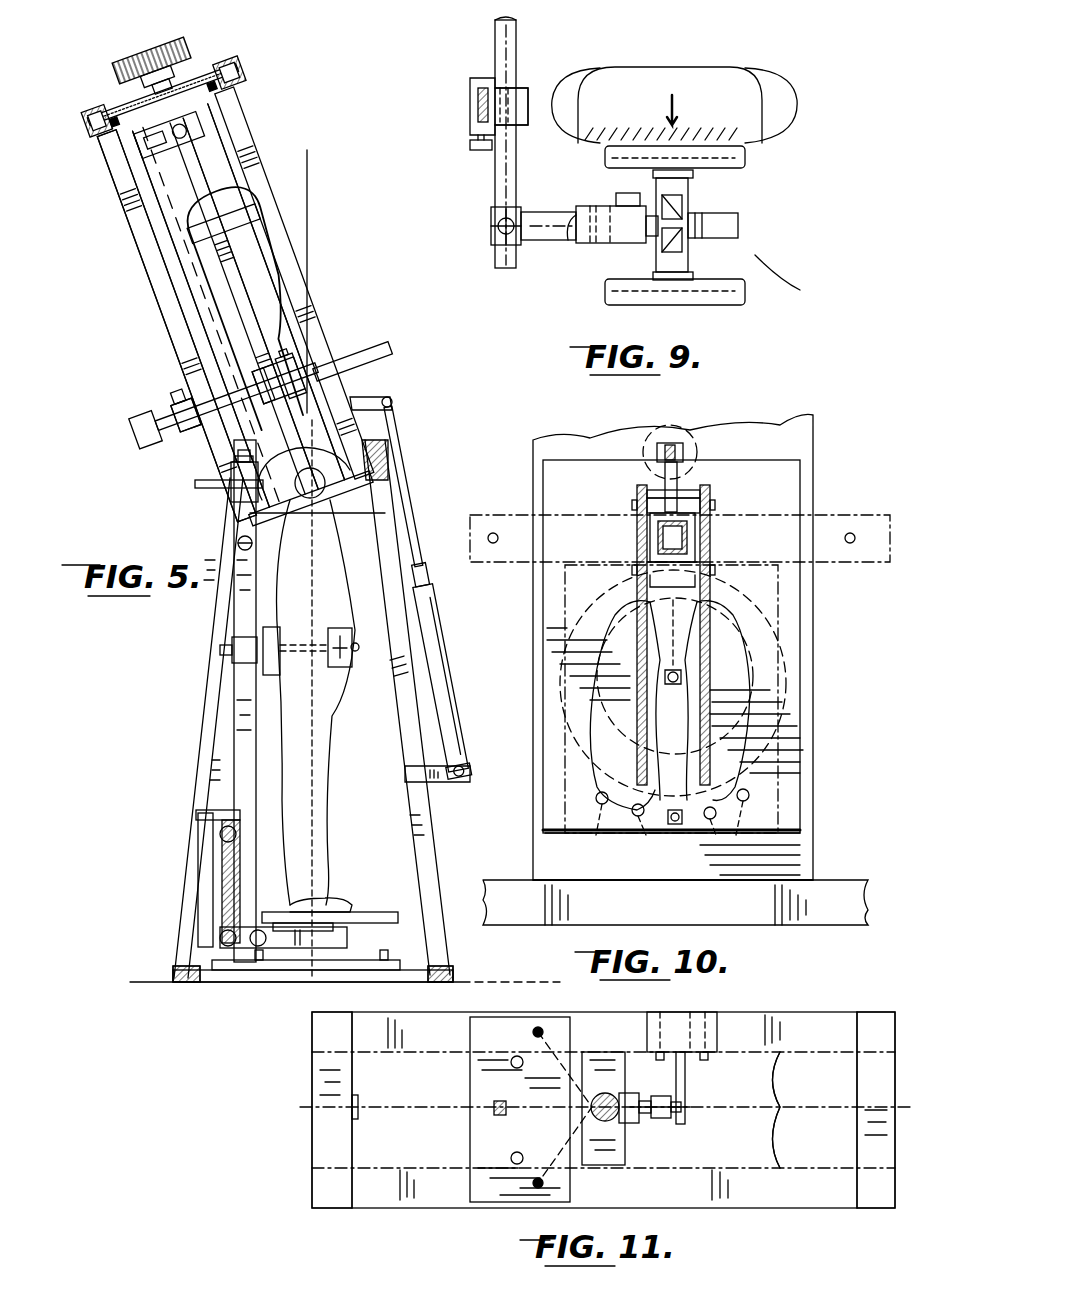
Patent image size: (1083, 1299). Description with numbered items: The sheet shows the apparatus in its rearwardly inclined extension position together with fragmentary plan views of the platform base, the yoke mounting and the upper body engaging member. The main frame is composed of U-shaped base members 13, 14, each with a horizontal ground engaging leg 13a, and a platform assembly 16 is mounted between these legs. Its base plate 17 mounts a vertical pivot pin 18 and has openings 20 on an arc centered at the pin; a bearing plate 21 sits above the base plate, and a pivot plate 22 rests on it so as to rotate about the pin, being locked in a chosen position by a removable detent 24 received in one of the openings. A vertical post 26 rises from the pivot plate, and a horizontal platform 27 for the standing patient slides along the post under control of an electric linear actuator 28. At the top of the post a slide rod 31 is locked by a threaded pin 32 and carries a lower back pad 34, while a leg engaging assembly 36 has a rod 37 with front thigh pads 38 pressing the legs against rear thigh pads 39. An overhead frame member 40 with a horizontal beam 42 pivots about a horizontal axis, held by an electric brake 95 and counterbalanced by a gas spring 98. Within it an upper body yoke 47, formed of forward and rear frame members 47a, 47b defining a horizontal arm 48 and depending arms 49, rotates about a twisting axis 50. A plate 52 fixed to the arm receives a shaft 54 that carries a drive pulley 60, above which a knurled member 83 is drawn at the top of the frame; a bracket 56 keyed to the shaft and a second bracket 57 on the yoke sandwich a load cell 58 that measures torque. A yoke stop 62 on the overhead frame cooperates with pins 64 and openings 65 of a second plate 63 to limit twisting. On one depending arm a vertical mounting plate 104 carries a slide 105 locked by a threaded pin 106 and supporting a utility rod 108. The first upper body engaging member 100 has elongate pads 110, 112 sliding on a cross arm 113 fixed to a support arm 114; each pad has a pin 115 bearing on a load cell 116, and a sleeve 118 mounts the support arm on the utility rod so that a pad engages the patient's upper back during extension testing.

In FIG. 5, the U-shaped base member 13 is at (437, 826).
In FIG. 10, the horizontal ground engaging leg 13a is at (832, 920).
In FIG. 5, the U-shaped base member 14 is at (188, 755).
In FIG. 5, the platform assembly 16 is at (215, 905).
In FIG. 10, the platform assembly 16 is at (627, 497).
In FIG. 5, the base plate 17 is at (412, 975).
In FIG. 10, the base plate 17 is at (800, 868).
In FIG. 5, the vertical pivot pin 18 is at (300, 968).
In FIG. 10, the vertical pivot pin 18 is at (680, 672).
In FIG. 10, the openings 20 is at (612, 831).
In FIG. 5, the bearing plate 21 is at (268, 985).
In FIG. 10, the bearing plate 21 is at (800, 596).
In FIG. 5, the pivot plate 22 is at (225, 980).
In FIG. 10, the pivot plate 22 is at (790, 752).
In FIG. 5, the removable detent 24 is at (400, 944).
In FIG. 10, the removable detent 24 is at (672, 830).
In FIG. 5, the vertical post 26 is at (235, 605).
In FIG. 10, the vertical post 26 is at (712, 505).
In FIG. 5, the horizontal platform 27 is at (350, 910).
In FIG. 5, the electric linear actuator 28 is at (205, 870).
In FIG. 10, the electric linear actuator 28 is at (680, 430).
In FIG. 5, the slide rod 31 is at (240, 505).
In FIG. 5, the threaded pin 32 is at (254, 543).
In FIG. 5, the lower back pad 34 is at (235, 488).
In FIG. 5, the leg engaging assembly 36 is at (263, 672).
In FIG. 5, the rod 37 is at (350, 660).
In FIG. 5, the front thigh pads 38 is at (320, 655).
In FIG. 5, the rear thigh pads 39 is at (272, 636).
In FIG. 5, the overhead frame member 40 is at (136, 287).
In FIG. 5, the horizontal beam 42 is at (232, 68).
In FIG. 5, the upper body yoke 47 is at (143, 201).
In FIG. 11, the upper body yoke 47 is at (304, 1152).
In FIG. 11, the forward frame member 47a is at (405, 1210).
In FIG. 11, the rear frame member 47b is at (775, 1012).
In FIG. 5, the horizontal arm 48 is at (150, 180).
In FIG. 11, the horizontal arm 48 is at (794, 1110).
In FIG. 5, the depending arms 49 is at (165, 215).
In FIG. 5, the twisting axis 50 is at (158, 45).
In FIG. 11, the plate 52 is at (625, 1093).
In FIG. 11, the shaft 54 is at (596, 1110).
In FIG. 11, the bracket 56 is at (632, 1123).
In FIG. 11, the second bracket 57 is at (690, 1082).
In FIG. 11, the load cell 58 is at (662, 1122).
In FIG. 5, the drive pulley 60 is at (172, 45).
In FIG. 5, the yoke stop 62 is at (215, 97).
In FIG. 11, the yoke stop 62 is at (494, 1110).
In FIG. 11, the second plate 63 is at (500, 1095).
In FIG. 5, the pins 64 is at (240, 108).
In FIG. 11, the pins 64 is at (538, 1028).
In FIG. 11, the openings 65 is at (511, 1064).
In FIG. 5, the knurled knob 83 is at (130, 70).
In FIG. 5, the electric brake 95 is at (317, 512).
In FIG. 5, the gas spring 98 is at (442, 648).
In FIG. 5, the first upper body engaging member 100 is at (153, 400).
In FIG. 9, the first upper body engaging member 100 is at (763, 252).
In FIG. 5, the vertical mounting plate 104 is at (253, 320).
In FIG. 9, the vertical mounting plate 104 is at (470, 102).
In FIG. 5, the slide 105 is at (262, 372).
In FIG. 9, the slide 105 is at (528, 92).
In FIG. 9, the threaded pin 106 is at (478, 150).
In FIG. 5, the utility rod 108 is at (368, 342).
In FIG. 9, the utility rod 108 is at (496, 180).
In FIG. 5, the elongate pad 110 is at (130, 436).
In FIG. 9, the elongate pad 110 is at (745, 160).
In FIG. 5, the elongate pad 112 is at (252, 392).
In FIG. 9, the elongate pad 112 is at (605, 302).
In FIG. 9, the cross arm 113 is at (660, 256).
In FIG. 9, the support arm 114 is at (540, 218).
In FIG. 9, the pin 115 is at (690, 200).
In FIG. 9, the load cell 116 is at (740, 226).
In FIG. 5, the sleeve 118 is at (172, 418).
In FIG. 9, the sleeve 118 is at (490, 226).